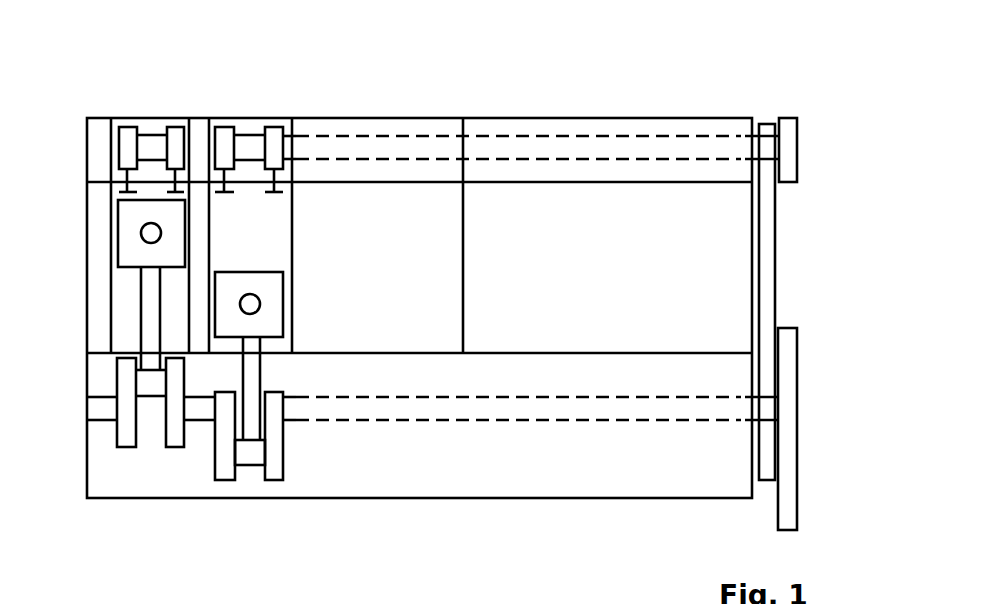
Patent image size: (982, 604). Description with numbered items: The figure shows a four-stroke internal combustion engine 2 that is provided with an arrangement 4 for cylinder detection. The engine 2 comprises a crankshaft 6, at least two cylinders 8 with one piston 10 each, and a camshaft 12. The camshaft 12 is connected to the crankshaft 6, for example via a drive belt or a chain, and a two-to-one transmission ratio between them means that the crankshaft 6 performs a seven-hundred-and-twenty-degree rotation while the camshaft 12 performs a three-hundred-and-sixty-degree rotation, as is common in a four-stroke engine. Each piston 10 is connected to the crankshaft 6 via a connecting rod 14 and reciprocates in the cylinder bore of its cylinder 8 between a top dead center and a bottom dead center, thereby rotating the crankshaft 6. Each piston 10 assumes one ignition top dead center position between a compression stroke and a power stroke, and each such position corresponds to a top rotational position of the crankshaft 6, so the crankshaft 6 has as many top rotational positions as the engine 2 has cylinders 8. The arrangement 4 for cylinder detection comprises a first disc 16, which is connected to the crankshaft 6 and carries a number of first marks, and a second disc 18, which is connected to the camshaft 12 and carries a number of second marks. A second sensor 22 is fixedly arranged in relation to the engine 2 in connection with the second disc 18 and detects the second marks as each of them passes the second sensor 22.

The four-stroke internal combustion engine 2 is at (786, 58).
The arrangement for cylinder detection 4 is at (808, 241).
The crankshaft 6 is at (177, 435).
The cylinder 8 is at (235, 238).
The piston 10 is at (232, 292).
The camshaft 12 is at (248, 143).
The connecting rod 14 is at (252, 373).
The first disc 16 is at (785, 416).
The second disc 18 is at (788, 150).
The second sensor 22 is at (383, 603).